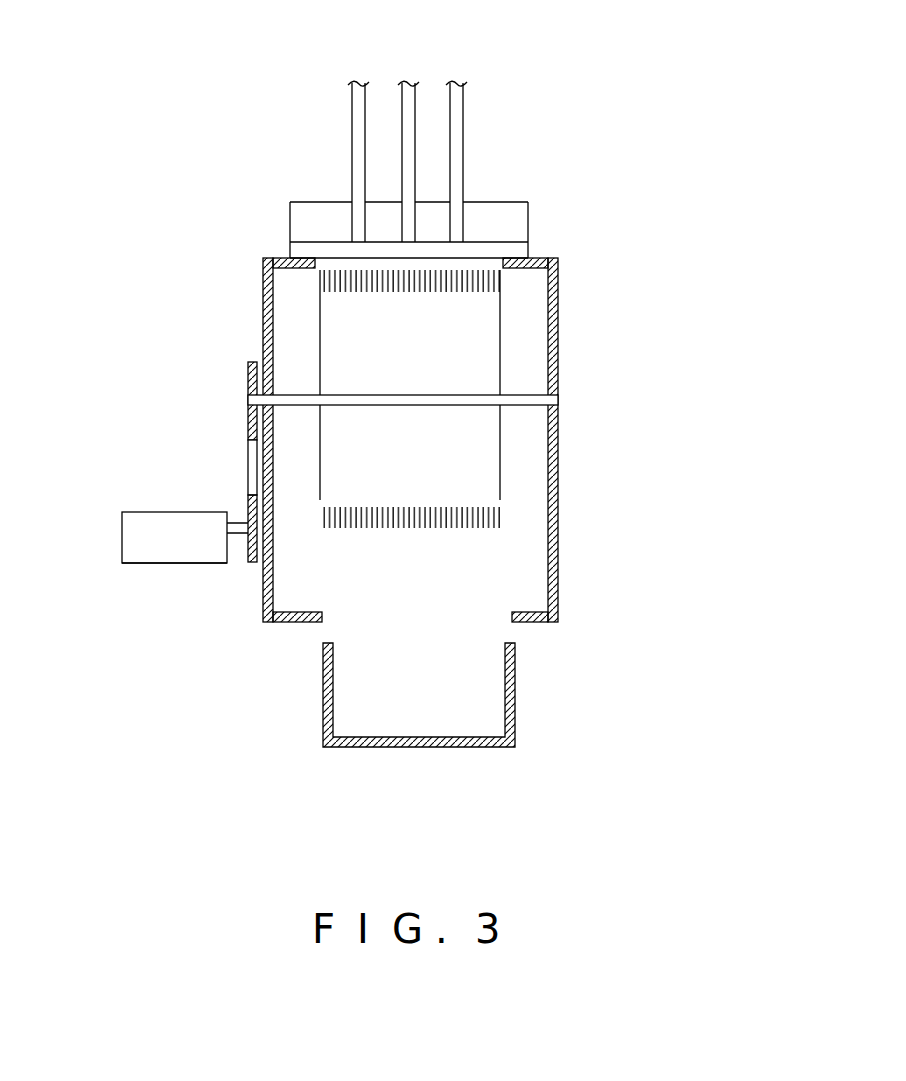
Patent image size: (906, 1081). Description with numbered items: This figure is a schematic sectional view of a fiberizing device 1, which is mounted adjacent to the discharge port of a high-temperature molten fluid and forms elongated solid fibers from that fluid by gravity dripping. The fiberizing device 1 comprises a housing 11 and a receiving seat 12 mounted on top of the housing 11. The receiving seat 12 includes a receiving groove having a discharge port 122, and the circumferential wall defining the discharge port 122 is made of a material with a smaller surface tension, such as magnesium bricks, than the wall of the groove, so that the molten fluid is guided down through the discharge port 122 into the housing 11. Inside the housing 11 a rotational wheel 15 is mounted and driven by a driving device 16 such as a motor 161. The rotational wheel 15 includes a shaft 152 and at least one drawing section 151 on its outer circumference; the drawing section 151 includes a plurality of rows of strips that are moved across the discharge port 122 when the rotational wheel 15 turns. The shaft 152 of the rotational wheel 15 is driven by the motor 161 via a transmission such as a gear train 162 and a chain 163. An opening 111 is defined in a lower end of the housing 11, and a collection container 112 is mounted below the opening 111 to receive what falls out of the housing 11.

The fiberizing device 1 is at (518, 503).
The housing 11 is at (558, 320).
The opening 111 is at (418, 611).
The collection container 112 is at (515, 703).
The receiving seat 12 is at (282, 215).
The discharge port 122 is at (353, 258).
The rotational wheel 15 is at (503, 457).
The drawing section 151 is at (453, 282).
The shaft 152 is at (512, 396).
The driving device 16 is at (118, 531).
The motor 161 is at (157, 565).
The gear train 162 is at (245, 562).
The chain 163 is at (250, 460).